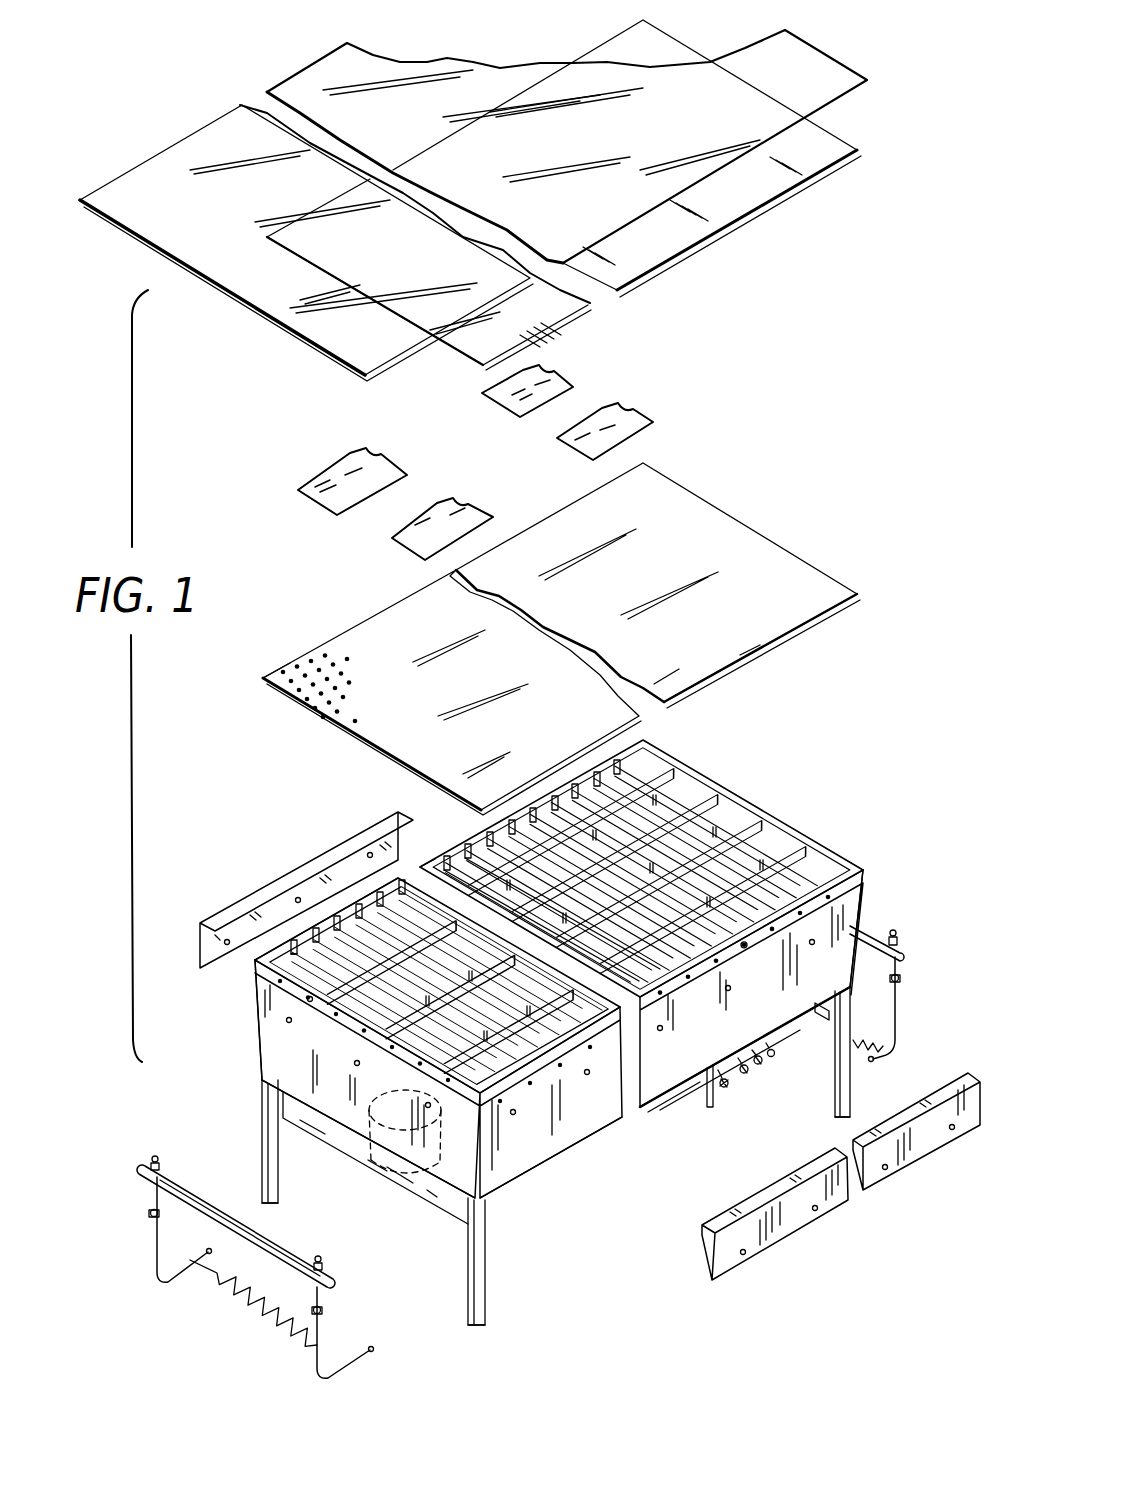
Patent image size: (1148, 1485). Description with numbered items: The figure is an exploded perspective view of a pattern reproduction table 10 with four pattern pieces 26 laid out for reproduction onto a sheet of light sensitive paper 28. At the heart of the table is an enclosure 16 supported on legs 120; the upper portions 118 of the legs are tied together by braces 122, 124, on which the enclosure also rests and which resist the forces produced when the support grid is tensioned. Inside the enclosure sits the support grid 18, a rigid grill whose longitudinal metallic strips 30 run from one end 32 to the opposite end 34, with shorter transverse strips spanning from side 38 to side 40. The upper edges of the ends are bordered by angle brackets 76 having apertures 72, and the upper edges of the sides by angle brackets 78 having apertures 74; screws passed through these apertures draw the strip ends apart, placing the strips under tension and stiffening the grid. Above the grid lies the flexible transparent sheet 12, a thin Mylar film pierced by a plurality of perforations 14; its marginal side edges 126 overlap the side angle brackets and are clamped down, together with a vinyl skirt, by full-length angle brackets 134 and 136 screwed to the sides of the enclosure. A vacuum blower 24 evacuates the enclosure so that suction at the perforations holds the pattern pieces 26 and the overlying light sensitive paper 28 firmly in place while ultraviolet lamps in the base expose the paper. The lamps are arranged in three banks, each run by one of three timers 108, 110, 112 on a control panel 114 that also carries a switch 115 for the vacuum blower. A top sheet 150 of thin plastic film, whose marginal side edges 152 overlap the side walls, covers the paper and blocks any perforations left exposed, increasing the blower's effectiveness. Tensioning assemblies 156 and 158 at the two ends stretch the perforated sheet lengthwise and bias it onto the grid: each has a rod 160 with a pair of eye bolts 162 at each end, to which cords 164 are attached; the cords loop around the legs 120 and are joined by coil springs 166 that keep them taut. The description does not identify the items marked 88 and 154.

The pattern reproduction table 10 is at (550, 1180).
The flexible transparent sheet 12 is at (302, 703).
The perforations 14 is at (319, 660).
The enclosure 16 is at (252, 1010).
The support grid 18 is at (305, 946).
The vacuum blower 24 is at (381, 1183).
The pattern pieces 26 is at (493, 407).
The light sensitive paper 28 is at (728, 227).
The longitudinal metallic strips 30 is at (423, 867).
The end 32 is at (258, 1030).
The opposite end 34 is at (708, 800).
The side 38 is at (375, 892).
The side 40 is at (573, 1138).
The apertures 72 is at (372, 1031).
The apertures 74 is at (740, 942).
The angle brackets 76 is at (776, 819).
The angle brackets 78 is at (832, 896).
The partition tabs 88 is at (333, 995).
The timer 108 is at (728, 1087).
The timer 110 is at (750, 1073).
The timer 112 is at (764, 1064).
The control panel 114 is at (712, 1108).
The switch 115 is at (700, 1105).
The upper portions of the legs 118 is at (263, 1186).
The legs 120 is at (262, 1100).
The brace 122 is at (427, 1196).
The brace 124 is at (823, 1018).
The marginal side edges 126 is at (627, 465).
The angle bracket 134 is at (240, 897).
The angle bracket 136 is at (787, 1228).
The top sheet 150 is at (330, 335).
The marginal side edges 152 is at (223, 289).
The cover blanket 154 is at (843, 68).
The tensioning assembly 156 is at (333, 1307).
The tensioning assembly 158 is at (910, 1003).
The rod 160 is at (870, 927).
The eye bolts 162 is at (903, 966).
The cords 164 is at (902, 1031).
The coil springs 166 is at (223, 1287).